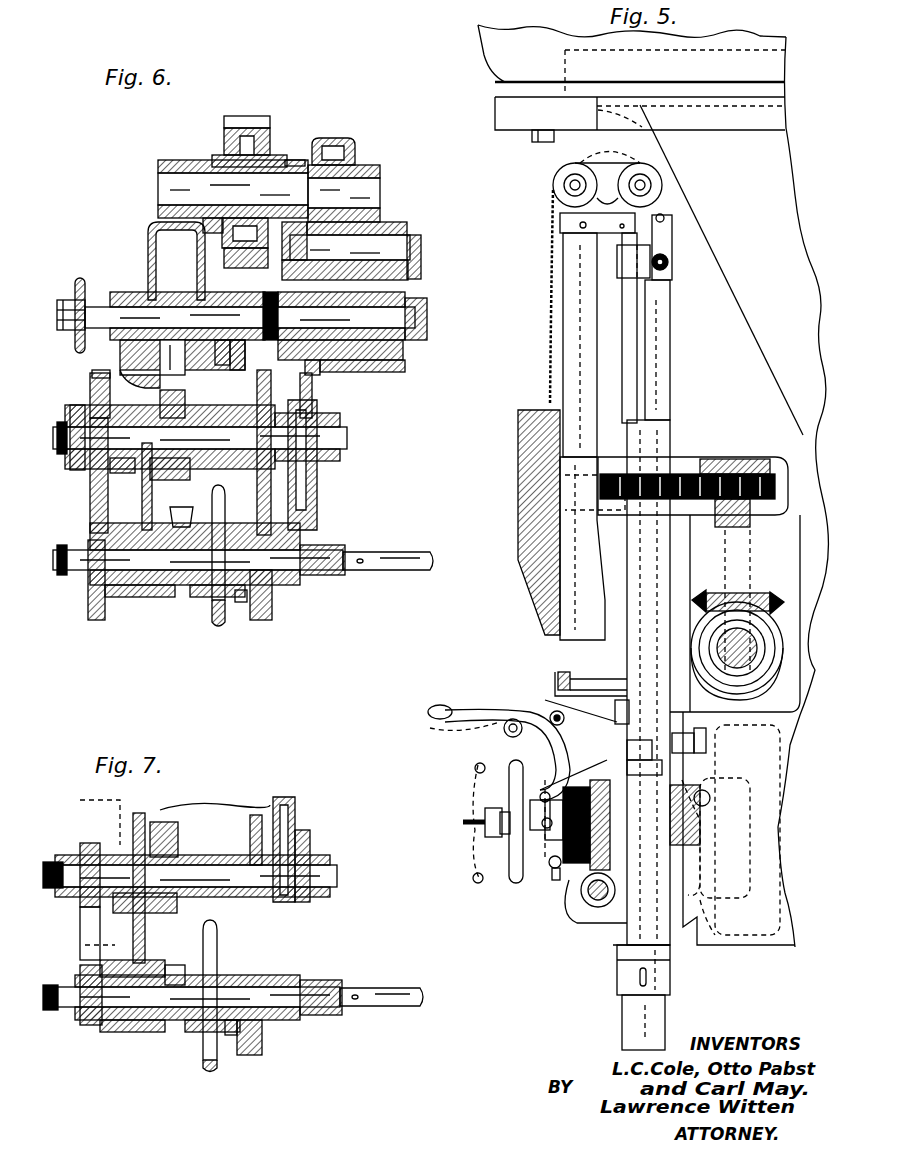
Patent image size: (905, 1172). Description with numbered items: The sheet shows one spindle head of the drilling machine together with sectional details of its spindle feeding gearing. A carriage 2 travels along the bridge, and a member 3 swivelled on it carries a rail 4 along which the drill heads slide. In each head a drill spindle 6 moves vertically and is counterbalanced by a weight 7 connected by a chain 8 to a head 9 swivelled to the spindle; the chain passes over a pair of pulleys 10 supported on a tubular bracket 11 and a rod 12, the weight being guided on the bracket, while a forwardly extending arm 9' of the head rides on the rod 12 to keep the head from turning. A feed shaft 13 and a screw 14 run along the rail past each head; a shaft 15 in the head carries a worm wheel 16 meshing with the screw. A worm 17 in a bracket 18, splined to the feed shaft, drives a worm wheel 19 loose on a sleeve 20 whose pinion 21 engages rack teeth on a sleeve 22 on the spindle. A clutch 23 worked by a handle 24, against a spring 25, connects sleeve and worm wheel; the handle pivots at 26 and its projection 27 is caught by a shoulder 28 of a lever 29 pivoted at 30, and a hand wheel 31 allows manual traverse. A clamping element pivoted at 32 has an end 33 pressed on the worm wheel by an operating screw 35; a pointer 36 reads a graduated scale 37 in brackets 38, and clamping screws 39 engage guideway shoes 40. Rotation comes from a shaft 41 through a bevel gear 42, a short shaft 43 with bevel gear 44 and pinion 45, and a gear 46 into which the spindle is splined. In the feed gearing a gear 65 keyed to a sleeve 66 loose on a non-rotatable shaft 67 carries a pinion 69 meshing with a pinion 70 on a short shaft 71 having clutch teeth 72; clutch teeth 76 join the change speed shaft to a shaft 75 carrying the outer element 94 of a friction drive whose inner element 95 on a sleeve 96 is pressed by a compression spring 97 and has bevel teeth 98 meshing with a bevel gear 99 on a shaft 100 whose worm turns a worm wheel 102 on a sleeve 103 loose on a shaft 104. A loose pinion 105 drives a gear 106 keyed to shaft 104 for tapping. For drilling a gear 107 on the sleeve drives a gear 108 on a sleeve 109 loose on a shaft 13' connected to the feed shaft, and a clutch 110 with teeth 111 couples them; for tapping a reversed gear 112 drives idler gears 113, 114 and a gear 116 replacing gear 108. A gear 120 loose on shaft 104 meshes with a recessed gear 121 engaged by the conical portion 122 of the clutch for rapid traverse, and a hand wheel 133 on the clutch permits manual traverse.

In FIG. 5, the carriage 2 is at (500, 63).
In FIG. 5, the member 3 is at (742, 293).
In FIG. 5, the rail 4 is at (752, 945).
In FIG. 5, the drill spindle 6 is at (620, 980).
In FIG. 5, the weight 7 is at (517, 488).
In FIG. 5, the chain 8 is at (551, 340).
In FIG. 5, the head 9 is at (675, 317).
In FIG. 5, the forwardly extending arm 9' is at (627, 277).
In FIG. 5, the pulleys 10 is at (636, 162).
In FIG. 5, the tubular bracket 11 is at (575, 268).
In FIG. 5, the rod 12 is at (628, 350).
In FIG. 6, the feed shaft 13 is at (393, 586).
In FIG. 7, the feed shaft 13 is at (381, 984).
In FIG. 5, the feed shaft 13 is at (584, 917).
In FIG. 6, the shaft 13' is at (349, 578).
In FIG. 7, the shaft 13' is at (339, 1020).
In FIG. 5, the screw 14 is at (708, 793).
In FIG. 5, the shaft 15 is at (470, 818).
In FIG. 5, the worm wheel 16 is at (738, 790).
In FIG. 5, the worm 17 is at (588, 905).
In FIG. 5, the bracket 18 is at (606, 945).
In FIG. 5, the worm wheel 19 is at (605, 770).
In FIG. 5, the sleeve 20 is at (643, 756).
In FIG. 5, the pinion 21 is at (644, 777).
In FIG. 5, the sleeve 22 is at (628, 670).
In FIG. 5, the clutch 23 is at (555, 845).
In FIG. 5, the handle 24 is at (437, 718).
In FIG. 5, the spring 25 is at (575, 878).
In FIG. 5, the pivot 26 is at (545, 790).
In FIG. 5, the lateral projection 27 is at (511, 737).
In FIG. 5, the shoulder 28 is at (470, 730).
In FIG. 5, the lever 29 is at (503, 710).
In FIG. 5, the pivot 30 is at (552, 712).
In FIG. 5, the hand wheel 31 is at (510, 872).
In FIG. 5, the pivot 32 is at (700, 890).
In FIG. 5, the end 33 is at (720, 850).
In FIG. 5, the operating screw 35 is at (550, 880).
In FIG. 5, the pointer 36 is at (554, 688).
In FIG. 5, the graduated scale 37 is at (560, 672).
In FIG. 5, the brackets 38 is at (590, 676).
In FIG. 5, the clamping screws 39 is at (615, 715).
In FIG. 5, the guideway shoes 40 is at (706, 738).
In FIG. 5, the shaft 41 is at (748, 665).
In FIG. 5, the bevel gear 42 is at (770, 660).
In FIG. 5, the short shaft 43 is at (755, 522).
In FIG. 5, the bevel gear 44 is at (775, 595).
In FIG. 5, the pinion 45 is at (765, 462).
In FIG. 5, the gear 46 is at (695, 470).
In FIG. 6, the gear 65 is at (251, 122).
In FIG. 6, the sleeve 66 is at (224, 158).
In FIG. 6, the non-rotatable shaft 67 is at (165, 190).
In FIG. 6, the pinion 69 is at (293, 158).
In FIG. 6, the pinion 70 is at (302, 204).
In FIG. 6, the short shaft 71 is at (384, 236).
In FIG. 6, the clutch teeth 72 is at (418, 248).
In FIG. 6, the shaft 75 is at (365, 350).
In FIG. 6, the clutch teeth 76 is at (425, 320).
In FIG. 6, the outer element 94 is at (226, 258).
In FIG. 6, the inner element 95 is at (243, 352).
In FIG. 6, the sleeve 96 is at (134, 292).
In FIG. 6, the compression spring 97 is at (92, 292).
In FIG. 6, the bevel gear teeth 98 is at (200, 290).
In FIG. 6, the bevel gear 99 is at (214, 358).
In FIG. 6, the shaft 100 is at (184, 372).
In FIG. 6, the worm wheel 102 is at (186, 406).
In FIG. 7, the worm wheel 102 is at (176, 826).
In FIG. 6, the sleeve 103 is at (122, 392).
In FIG. 7, the sleeve 103 is at (133, 828).
In FIG. 6, the shaft 104 is at (347, 440).
In FIG. 7, the shaft 104 is at (337, 878).
In FIG. 6, the pinion 105 is at (270, 286).
In FIG. 6, the gear 106 is at (316, 406).
In FIG. 7, the gear 106 is at (298, 816).
In FIG. 6, the gear 107 is at (101, 370).
In FIG. 6, the gear 108 is at (96, 620).
In FIG. 6, the sleeve 109 is at (130, 598).
In FIG. 7, the sleeve 109 is at (130, 1032).
In FIG. 6, the clutch 110 is at (201, 592).
In FIG. 7, the clutch 110 is at (196, 1032).
In FIG. 6, the clutch teeth 111 is at (176, 524).
In FIG. 7, the clutch teeth 111 is at (176, 972).
In FIG. 6, the gear 112 is at (76, 470).
In FIG. 7, the gear 112 is at (80, 850).
In FIG. 7, the idler gear 113 is at (80, 914).
In FIG. 7, the idler gear 114 is at (80, 940).
In FIG. 7, the gear 116 is at (92, 1030).
In FIG. 6, the gear 120 is at (257, 478).
In FIG. 7, the gear 120 is at (256, 815).
In FIG. 6, the gear 121 is at (272, 605).
In FIG. 7, the gear 121 is at (262, 1042).
In FIG. 6, the conical portion 122 is at (240, 604).
In FIG. 7, the conical portion 122 is at (238, 1040).
In FIG. 6, the hand wheel 133 is at (213, 632).
In FIG. 7, the hand wheel 133 is at (212, 1077).